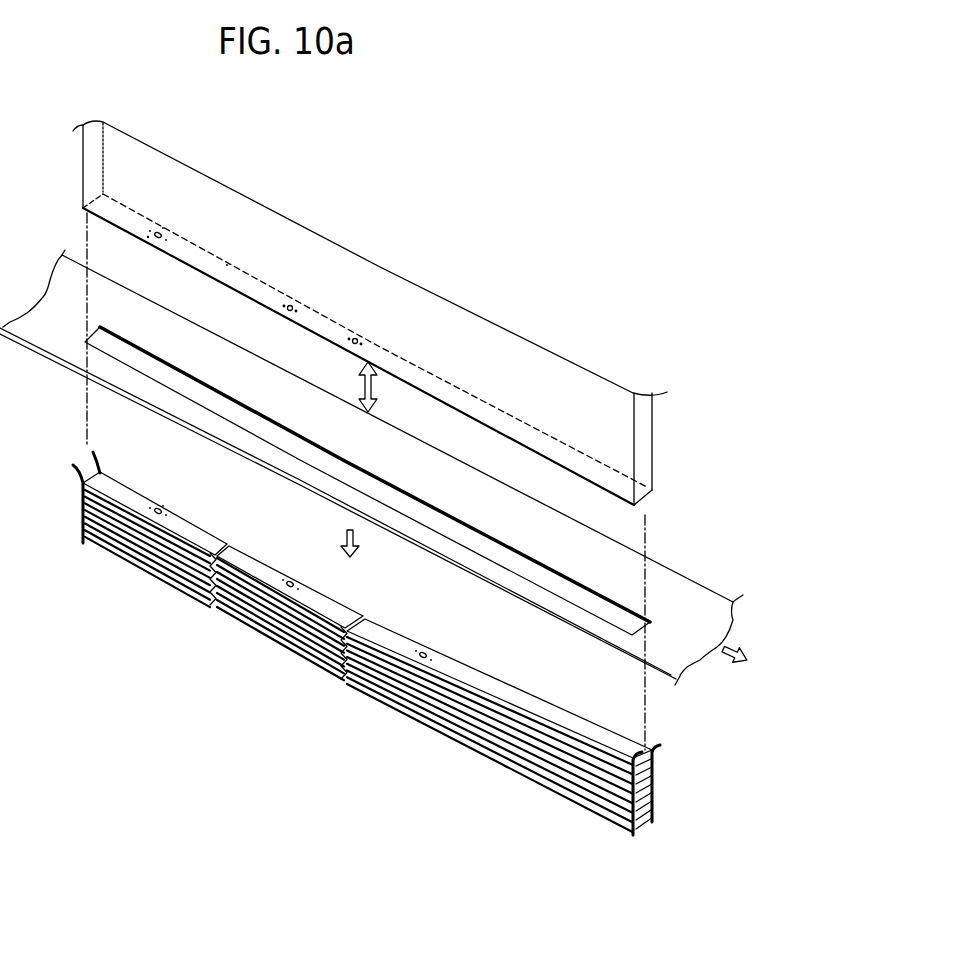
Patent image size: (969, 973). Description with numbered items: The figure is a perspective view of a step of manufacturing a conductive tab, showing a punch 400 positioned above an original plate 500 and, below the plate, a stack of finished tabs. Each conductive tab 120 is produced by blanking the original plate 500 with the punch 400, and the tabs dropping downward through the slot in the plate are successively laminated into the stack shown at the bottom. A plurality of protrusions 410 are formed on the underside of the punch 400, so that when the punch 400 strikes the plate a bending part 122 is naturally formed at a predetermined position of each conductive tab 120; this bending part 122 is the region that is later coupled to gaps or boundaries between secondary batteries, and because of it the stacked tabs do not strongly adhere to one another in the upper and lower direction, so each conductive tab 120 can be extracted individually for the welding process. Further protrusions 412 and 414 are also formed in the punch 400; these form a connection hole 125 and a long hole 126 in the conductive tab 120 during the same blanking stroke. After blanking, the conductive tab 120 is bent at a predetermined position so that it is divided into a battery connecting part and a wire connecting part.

The conductive tab 120 is at (522, 684).
The bending part 122 is at (242, 534).
The connection hole 125 is at (148, 508).
The long hole 126 is at (155, 512).
The punch 400 is at (676, 440).
The protrusions 410 is at (218, 272).
The protrusion 412 is at (157, 236).
The protrusion 414 is at (148, 237).
The original plate 500 is at (678, 583).